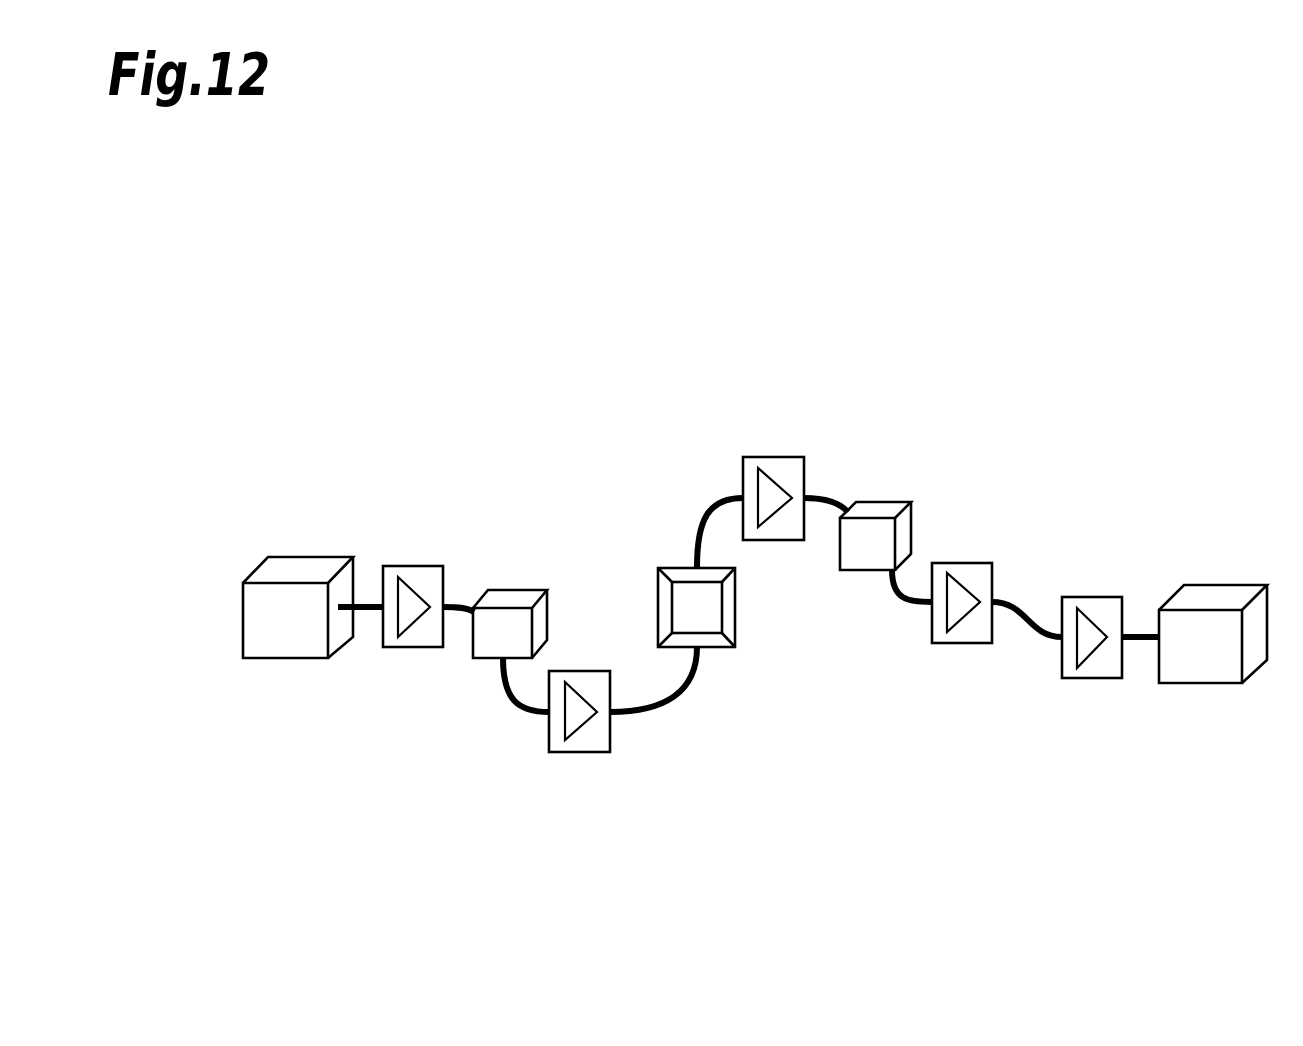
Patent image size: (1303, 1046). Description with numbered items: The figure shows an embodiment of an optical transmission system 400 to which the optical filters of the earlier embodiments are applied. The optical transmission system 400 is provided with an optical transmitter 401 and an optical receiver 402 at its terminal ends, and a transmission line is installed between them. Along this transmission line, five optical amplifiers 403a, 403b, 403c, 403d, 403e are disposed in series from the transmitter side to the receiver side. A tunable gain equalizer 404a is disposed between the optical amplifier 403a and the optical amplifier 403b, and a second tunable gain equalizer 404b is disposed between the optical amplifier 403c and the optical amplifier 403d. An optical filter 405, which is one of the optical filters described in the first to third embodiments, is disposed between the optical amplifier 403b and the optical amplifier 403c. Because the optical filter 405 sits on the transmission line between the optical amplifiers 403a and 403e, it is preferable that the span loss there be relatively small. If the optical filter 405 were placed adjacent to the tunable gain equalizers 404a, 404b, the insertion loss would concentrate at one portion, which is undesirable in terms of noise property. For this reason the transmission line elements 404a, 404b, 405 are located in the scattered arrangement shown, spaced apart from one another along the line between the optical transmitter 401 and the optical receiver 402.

The optical transmission system 400 is at (799, 152).
The optical transmitter 401 is at (305, 557).
The optical receiver 402 is at (1202, 685).
The optical amplifier 403a is at (413, 566).
The optical amplifier 403b is at (580, 753).
The optical amplifier 403c is at (777, 457).
The optical amplifier 403d is at (957, 645).
The optical amplifier 403e is at (1092, 680).
The tunable gain equalizer 404a is at (517, 590).
The tunable gain equalizer 404b is at (883, 502).
The optical filter 405 is at (735, 612).